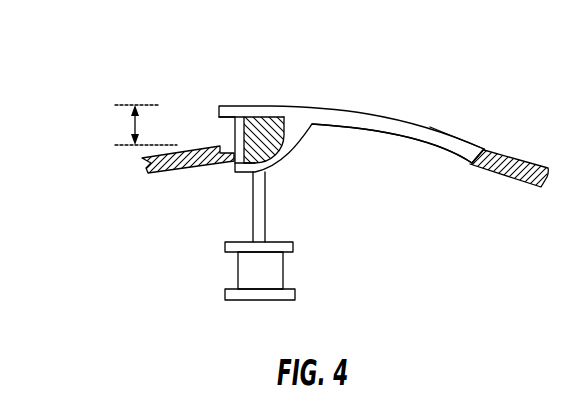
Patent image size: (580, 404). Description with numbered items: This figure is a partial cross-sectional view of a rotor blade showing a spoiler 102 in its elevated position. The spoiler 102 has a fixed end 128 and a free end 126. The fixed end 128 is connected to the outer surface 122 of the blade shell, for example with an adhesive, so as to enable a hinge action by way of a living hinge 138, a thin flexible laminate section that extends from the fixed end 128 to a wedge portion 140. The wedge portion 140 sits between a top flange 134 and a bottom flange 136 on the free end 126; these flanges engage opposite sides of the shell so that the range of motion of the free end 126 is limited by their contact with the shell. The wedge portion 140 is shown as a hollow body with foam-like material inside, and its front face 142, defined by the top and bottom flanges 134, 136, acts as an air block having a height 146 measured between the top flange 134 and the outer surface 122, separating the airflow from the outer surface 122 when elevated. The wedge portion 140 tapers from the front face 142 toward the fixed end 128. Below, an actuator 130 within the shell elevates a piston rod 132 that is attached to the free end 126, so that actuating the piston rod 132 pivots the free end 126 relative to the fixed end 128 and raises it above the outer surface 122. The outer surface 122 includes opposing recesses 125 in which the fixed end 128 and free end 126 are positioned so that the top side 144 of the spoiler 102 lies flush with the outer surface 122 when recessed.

The spoiler 102 is at (436, 41).
The outer surface 122 is at (517, 152).
The recess 125 is at (230, 145).
The free end 126 is at (275, 100).
The fixed end 128 is at (459, 126).
The actuator 130 is at (226, 275).
The piston rod 132 is at (252, 220).
The top flange 134 is at (232, 107).
The bottom flange 136 is at (235, 172).
The living hinge 138 is at (472, 160).
The wedge portion 140 is at (284, 168).
The front face 142 is at (233, 133).
The top side 144 is at (368, 112).
The height 146 is at (132, 128).